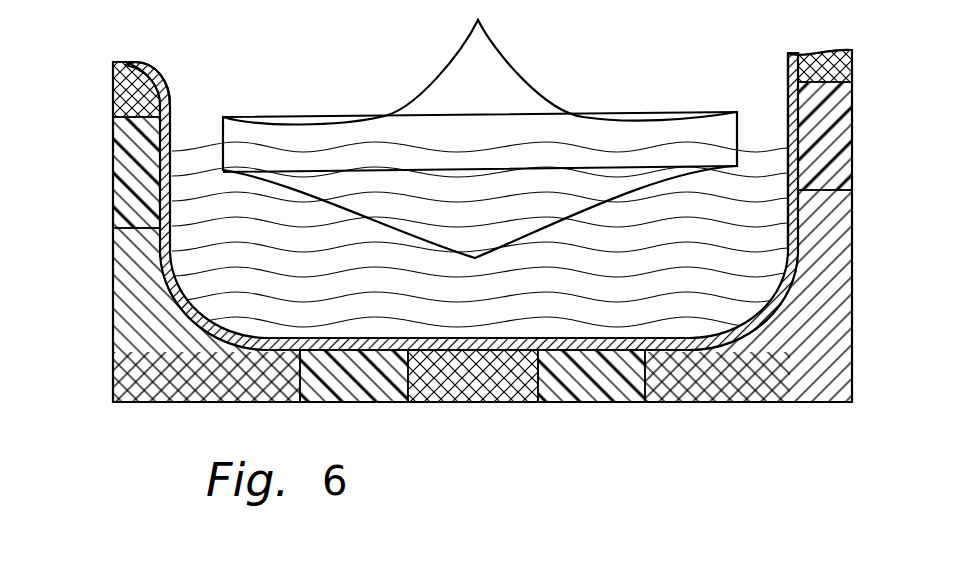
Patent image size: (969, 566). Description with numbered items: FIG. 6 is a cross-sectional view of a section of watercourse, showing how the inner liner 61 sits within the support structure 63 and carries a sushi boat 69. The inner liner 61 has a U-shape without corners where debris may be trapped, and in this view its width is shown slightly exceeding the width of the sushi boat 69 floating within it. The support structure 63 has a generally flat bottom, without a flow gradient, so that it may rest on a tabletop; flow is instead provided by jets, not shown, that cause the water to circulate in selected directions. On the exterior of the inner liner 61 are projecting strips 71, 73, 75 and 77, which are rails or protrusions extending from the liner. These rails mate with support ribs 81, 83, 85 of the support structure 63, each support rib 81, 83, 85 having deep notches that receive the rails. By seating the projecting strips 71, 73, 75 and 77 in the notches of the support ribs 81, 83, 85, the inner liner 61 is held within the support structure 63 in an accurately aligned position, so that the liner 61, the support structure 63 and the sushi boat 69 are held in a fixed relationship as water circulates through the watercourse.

The inner liner 61 is at (168, 95).
The support structure 63 is at (91, 394).
The sushi boat 69 is at (485, 72).
The projecting strip 71 is at (125, 163).
The projecting strip 73 is at (352, 390).
The projecting strip 75 is at (592, 388).
The projecting strip 77 is at (836, 152).
The support rib 81 is at (125, 266).
The support rib 83 is at (468, 393).
The support rib 85 is at (785, 385).